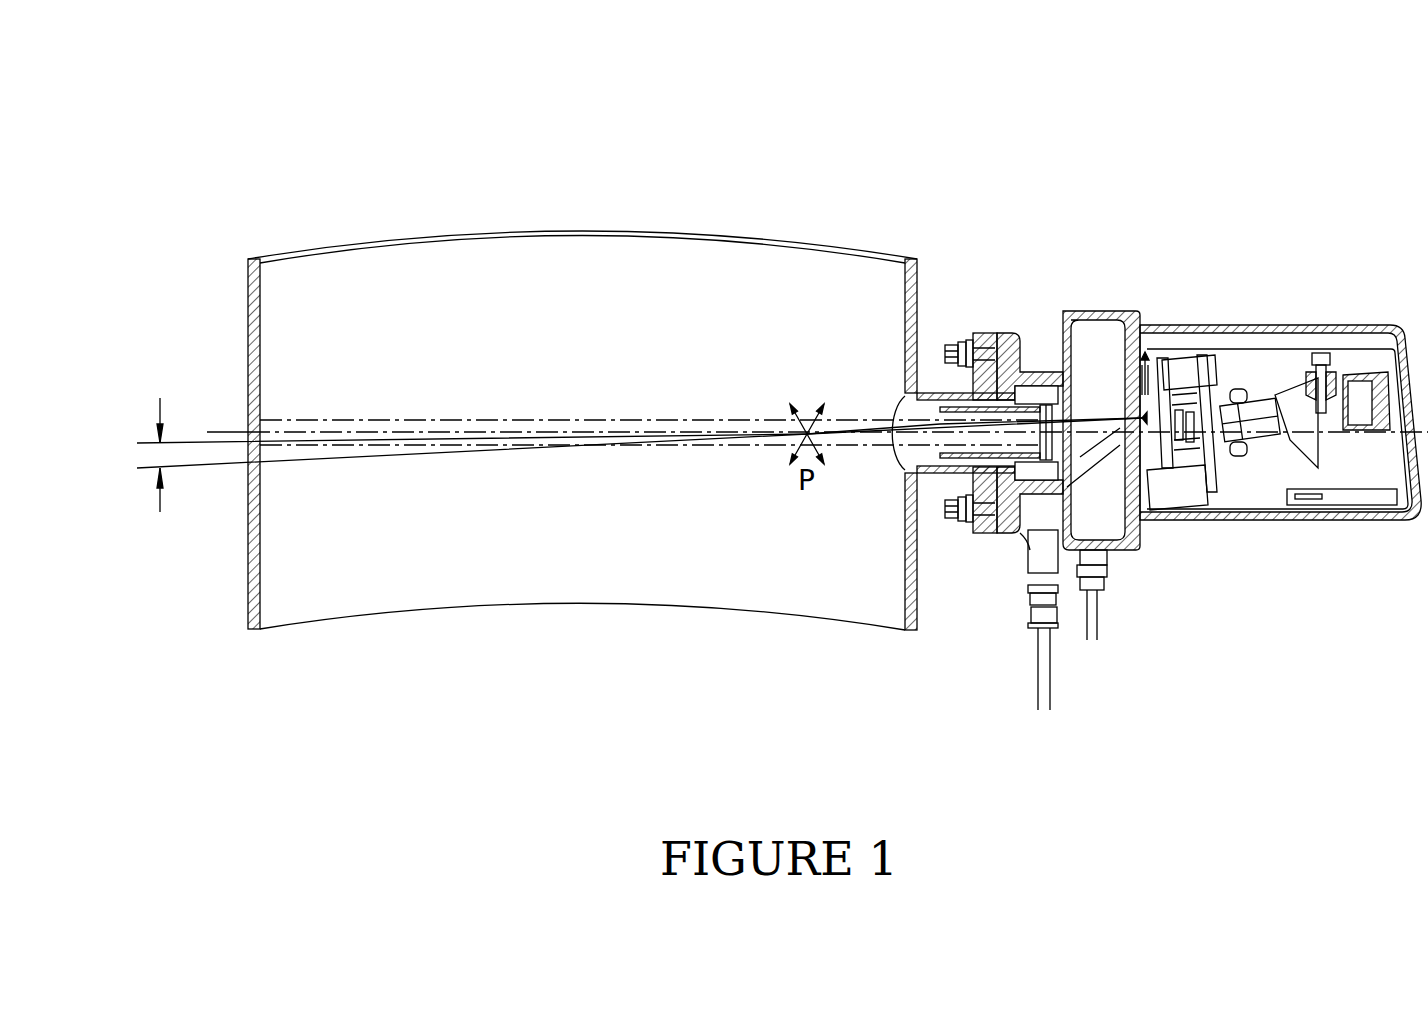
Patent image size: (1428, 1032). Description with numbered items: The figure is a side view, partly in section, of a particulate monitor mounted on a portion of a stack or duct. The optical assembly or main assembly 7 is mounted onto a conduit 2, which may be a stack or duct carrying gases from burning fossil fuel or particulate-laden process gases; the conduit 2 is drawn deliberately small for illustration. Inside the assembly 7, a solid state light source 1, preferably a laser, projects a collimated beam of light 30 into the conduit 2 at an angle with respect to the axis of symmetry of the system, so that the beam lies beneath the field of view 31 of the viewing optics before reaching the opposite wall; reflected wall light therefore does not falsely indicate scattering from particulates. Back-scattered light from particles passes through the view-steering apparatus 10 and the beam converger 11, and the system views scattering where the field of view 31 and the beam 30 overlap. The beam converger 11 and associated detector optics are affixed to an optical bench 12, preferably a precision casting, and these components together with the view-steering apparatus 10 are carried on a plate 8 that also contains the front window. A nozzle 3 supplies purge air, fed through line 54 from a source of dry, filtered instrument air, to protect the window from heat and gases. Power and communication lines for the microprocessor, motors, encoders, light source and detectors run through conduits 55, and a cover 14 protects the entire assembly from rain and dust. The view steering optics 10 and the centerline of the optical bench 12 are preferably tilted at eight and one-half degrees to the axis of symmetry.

The solid state light source 1 is at (1152, 358).
The conduit 2 is at (680, 213).
The nozzle 3 is at (942, 457).
The optical assembly 7 is at (1293, 583).
The plate 8 is at (1128, 312).
The view-steering apparatus 10 is at (1203, 505).
The beam converger 11 is at (1237, 352).
The optical bench 12 is at (1303, 350).
The cover 14 is at (1375, 327).
The collimated beam of light 30 is at (397, 462).
The field of view 31 is at (414, 420).
The line 54 is at (1038, 673).
The conduits 55 is at (1095, 627).